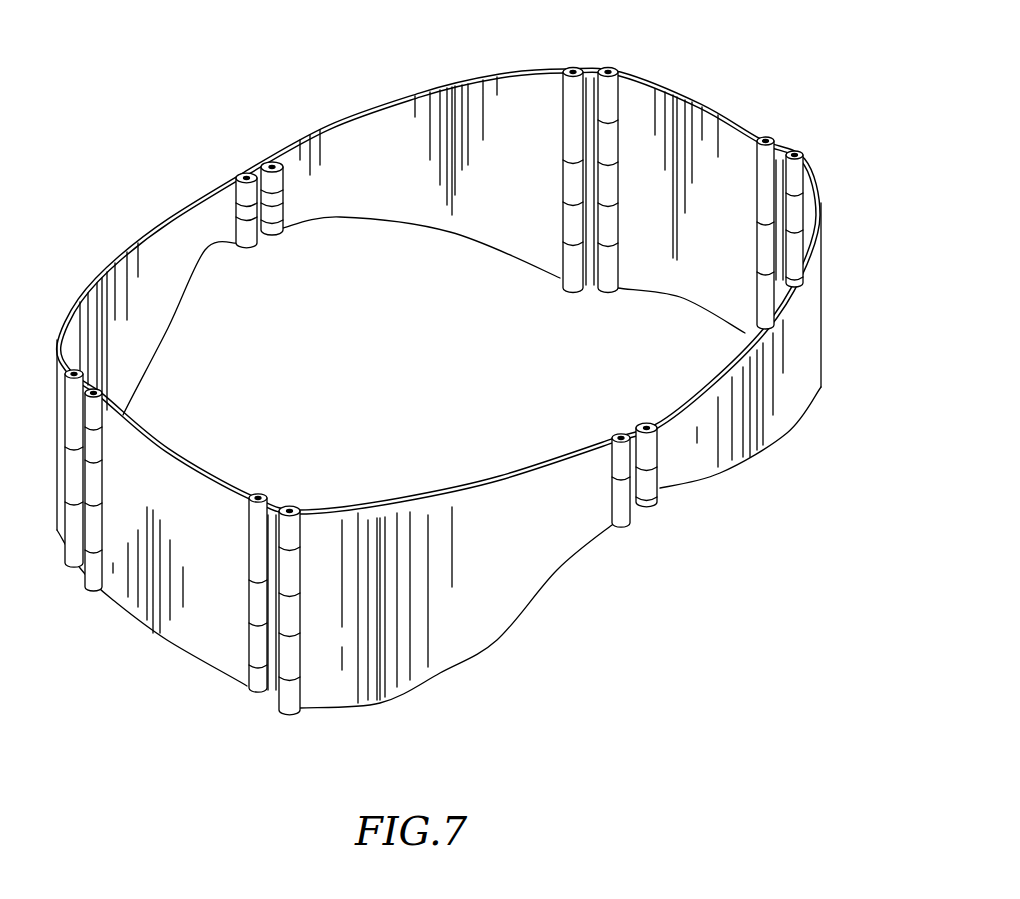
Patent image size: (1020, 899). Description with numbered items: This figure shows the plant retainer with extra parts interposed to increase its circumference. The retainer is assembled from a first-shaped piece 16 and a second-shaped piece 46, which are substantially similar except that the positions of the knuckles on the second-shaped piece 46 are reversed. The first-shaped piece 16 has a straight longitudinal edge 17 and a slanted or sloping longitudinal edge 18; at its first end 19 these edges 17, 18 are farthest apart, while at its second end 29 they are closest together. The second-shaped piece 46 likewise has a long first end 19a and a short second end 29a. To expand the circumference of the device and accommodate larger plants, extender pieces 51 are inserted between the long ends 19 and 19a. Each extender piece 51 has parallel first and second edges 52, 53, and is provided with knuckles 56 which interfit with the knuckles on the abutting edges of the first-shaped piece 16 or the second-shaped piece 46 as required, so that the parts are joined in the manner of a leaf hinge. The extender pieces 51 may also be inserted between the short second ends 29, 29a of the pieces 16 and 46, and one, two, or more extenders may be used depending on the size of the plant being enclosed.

The first-shaped piece 16 is at (442, 88).
The straight longitudinal edge 17 is at (127, 240).
The slanted longitudinal edge 18 is at (341, 128).
The first end 19 is at (527, 93).
The first end 19a is at (822, 217).
The second end 29 is at (203, 245).
The second end 29a is at (583, 528).
The second-shaped piece 46 is at (453, 655).
The extender piece 51 is at (645, 93).
The first edge 52 is at (693, 93).
The second edge 53 is at (652, 293).
The knuckle 56 is at (608, 100).